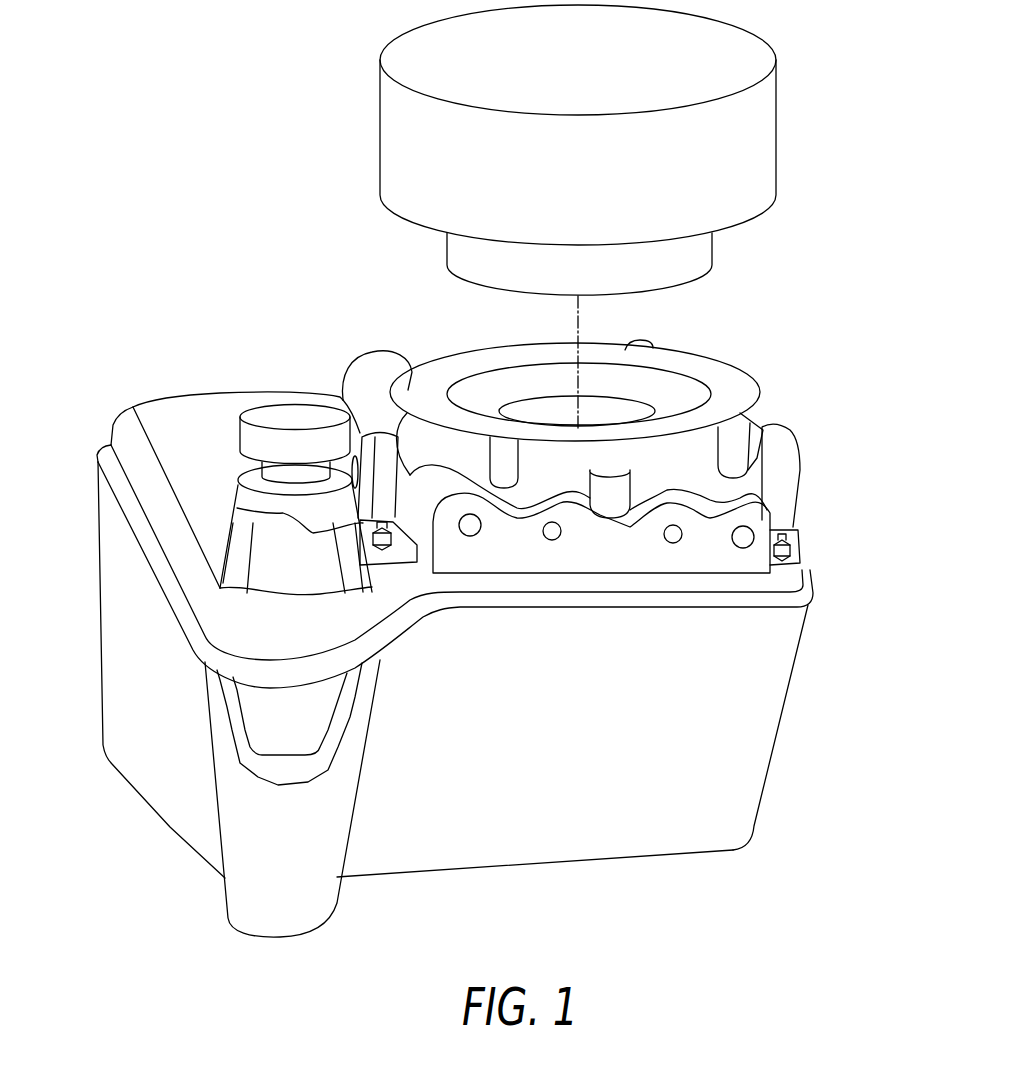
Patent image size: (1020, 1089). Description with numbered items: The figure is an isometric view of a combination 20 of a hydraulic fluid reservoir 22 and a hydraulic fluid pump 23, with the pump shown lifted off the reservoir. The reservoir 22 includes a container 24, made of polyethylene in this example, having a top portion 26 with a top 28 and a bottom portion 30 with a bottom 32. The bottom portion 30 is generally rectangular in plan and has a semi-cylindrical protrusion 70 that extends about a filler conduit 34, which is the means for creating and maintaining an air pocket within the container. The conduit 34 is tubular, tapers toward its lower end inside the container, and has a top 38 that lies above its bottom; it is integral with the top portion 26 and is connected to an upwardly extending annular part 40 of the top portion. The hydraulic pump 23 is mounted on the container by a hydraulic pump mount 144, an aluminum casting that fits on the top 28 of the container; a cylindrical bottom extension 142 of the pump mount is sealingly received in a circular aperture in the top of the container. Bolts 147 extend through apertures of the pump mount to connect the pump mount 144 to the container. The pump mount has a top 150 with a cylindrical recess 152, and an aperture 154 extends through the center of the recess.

The combination 20 is at (760, 330).
The hydraulic fluid reservoir 22 is at (468, 693).
The hydraulic fluid pump 23 is at (733, 165).
The container 24 is at (765, 688).
The top portion 26 is at (160, 507).
The top 28 is at (197, 443).
The bottom portion 30 is at (488, 798).
The bottom 32 is at (623, 860).
The filler conduit 34 is at (280, 514).
The top of the conduit 38 is at (278, 470).
The annular part 40 is at (365, 575).
The semi-cylindrical protrusion 70 is at (303, 873).
The cylindrical bottom extension 142 is at (482, 258).
The hydraulic pump mount 144 is at (783, 453).
The bolts 147 is at (382, 528).
The top of the pump mount 150 is at (745, 393).
The cylindrical recess 152 is at (665, 387).
The aperture 154 is at (590, 415).